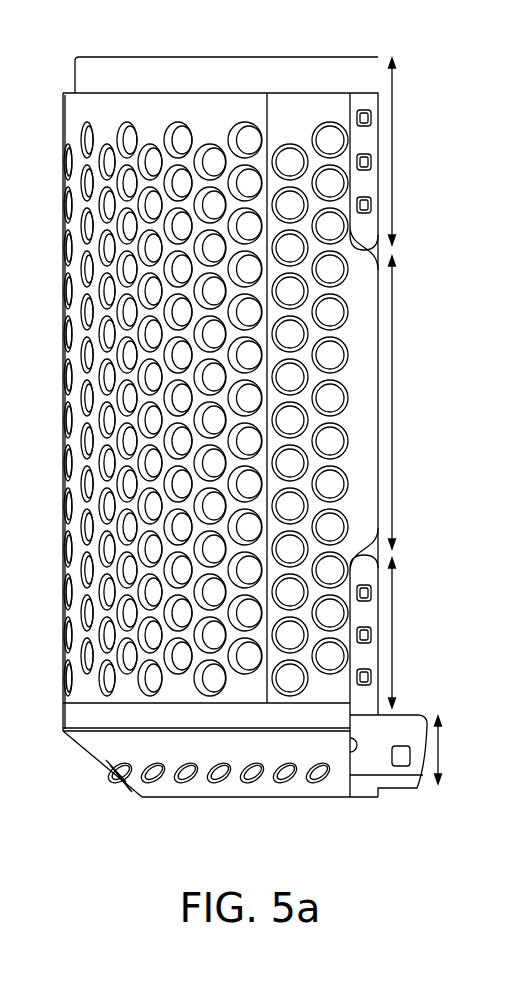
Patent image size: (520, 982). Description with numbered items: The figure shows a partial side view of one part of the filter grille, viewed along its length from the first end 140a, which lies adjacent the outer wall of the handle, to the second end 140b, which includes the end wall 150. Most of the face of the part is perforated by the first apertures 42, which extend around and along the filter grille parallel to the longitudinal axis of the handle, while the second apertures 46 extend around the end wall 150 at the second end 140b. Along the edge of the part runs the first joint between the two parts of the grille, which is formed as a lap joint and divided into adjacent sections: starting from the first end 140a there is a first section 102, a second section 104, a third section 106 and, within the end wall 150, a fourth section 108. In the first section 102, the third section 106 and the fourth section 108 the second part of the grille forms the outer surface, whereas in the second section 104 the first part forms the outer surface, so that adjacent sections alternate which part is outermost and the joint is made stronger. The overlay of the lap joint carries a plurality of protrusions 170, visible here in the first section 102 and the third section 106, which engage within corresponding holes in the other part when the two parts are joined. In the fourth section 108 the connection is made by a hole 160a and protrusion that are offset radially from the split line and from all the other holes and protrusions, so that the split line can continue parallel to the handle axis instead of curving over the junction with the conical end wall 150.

The first end 140a is at (140, 57).
The protrusions 170 is at (359, 111).
The first section 102 is at (416, 151).
The second section 104 is at (416, 402).
The third section 106 is at (416, 633).
The fourth section 108 is at (462, 750).
The first apertures 42 is at (108, 548).
The end wall 150 is at (95, 742).
The second end 140b is at (155, 800).
The second apertures 46 is at (217, 783).
The hole 160a is at (402, 769).